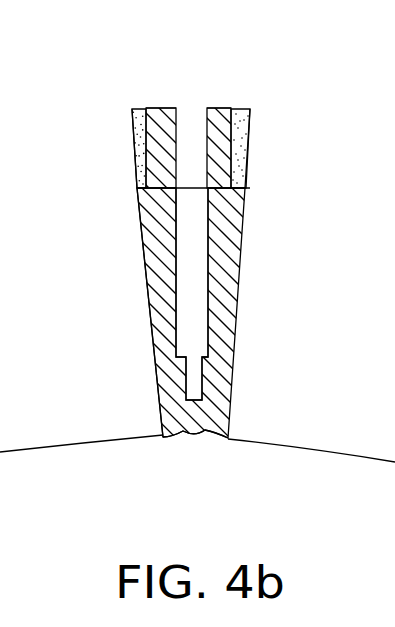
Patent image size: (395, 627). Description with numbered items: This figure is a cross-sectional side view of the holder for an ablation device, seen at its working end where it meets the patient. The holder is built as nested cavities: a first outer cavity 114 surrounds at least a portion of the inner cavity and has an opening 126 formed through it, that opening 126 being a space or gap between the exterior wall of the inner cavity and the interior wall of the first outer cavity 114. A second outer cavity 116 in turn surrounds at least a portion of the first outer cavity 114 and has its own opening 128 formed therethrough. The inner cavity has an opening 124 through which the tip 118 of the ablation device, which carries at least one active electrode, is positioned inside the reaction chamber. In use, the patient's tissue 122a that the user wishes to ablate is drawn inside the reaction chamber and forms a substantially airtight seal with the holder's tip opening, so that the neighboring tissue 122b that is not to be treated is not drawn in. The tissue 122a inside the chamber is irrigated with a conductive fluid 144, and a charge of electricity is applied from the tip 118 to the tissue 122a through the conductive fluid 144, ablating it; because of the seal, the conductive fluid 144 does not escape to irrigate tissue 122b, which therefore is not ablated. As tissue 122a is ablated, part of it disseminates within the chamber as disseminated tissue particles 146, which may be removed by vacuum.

The first outer cavity 114 is at (215, 108).
The second outer cavity 116 is at (137, 147).
The tip 118 is at (163, 415).
The patient's tissue 122a is at (285, 442).
The patient's tissue 122b is at (197, 432).
The opening 124 is at (190, 190).
The opening 126 is at (137, 165).
The opening 128 is at (137, 184).
The conductive fluid 144 is at (142, 124).
The disseminated tissue particles 146 is at (140, 112).